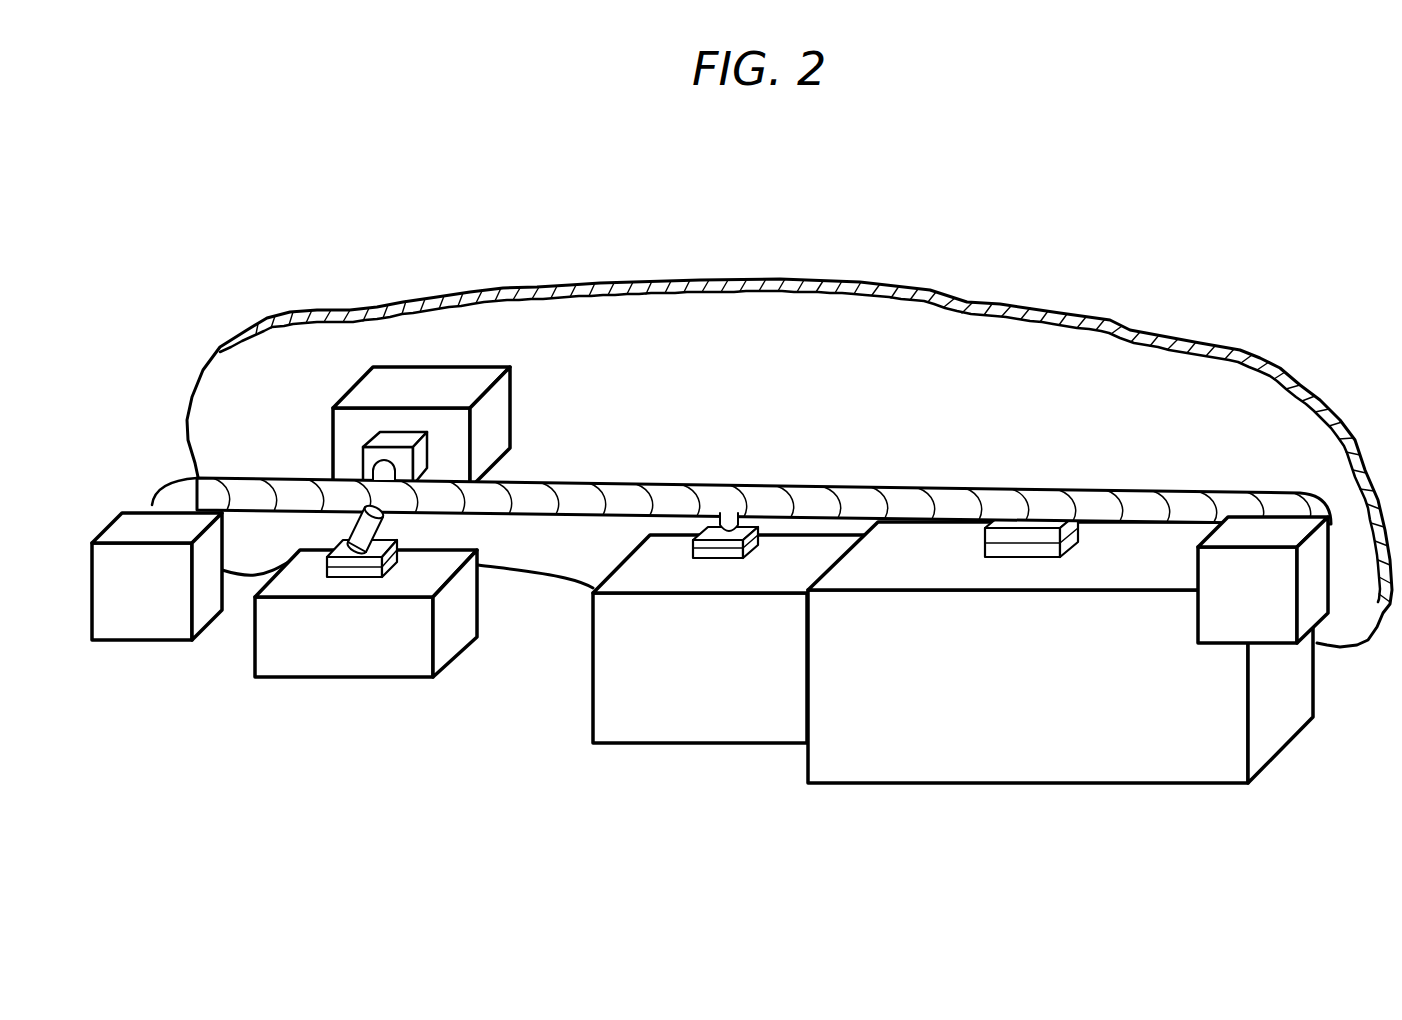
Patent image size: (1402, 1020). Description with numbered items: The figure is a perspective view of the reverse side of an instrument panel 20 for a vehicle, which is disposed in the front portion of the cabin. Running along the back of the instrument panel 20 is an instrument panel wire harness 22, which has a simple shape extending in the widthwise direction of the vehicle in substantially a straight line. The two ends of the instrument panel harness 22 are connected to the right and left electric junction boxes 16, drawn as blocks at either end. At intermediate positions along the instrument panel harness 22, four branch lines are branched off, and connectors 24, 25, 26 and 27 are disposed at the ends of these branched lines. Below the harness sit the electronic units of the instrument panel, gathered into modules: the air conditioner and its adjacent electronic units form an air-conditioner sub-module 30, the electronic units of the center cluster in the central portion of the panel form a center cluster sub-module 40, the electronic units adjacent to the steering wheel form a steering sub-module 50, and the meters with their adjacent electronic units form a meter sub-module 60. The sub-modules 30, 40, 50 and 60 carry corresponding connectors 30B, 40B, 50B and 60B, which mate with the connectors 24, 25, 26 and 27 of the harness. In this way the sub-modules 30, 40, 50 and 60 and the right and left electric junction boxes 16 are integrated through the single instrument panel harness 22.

The electric junction box 16 is at (142, 631).
The instrument panel 20 is at (868, 317).
The instrument panel wire harness 22 is at (795, 493).
The connector 24 is at (1030, 537).
The connector 25 is at (705, 543).
The connector 26 is at (347, 560).
The connector 27 is at (400, 473).
The air-conditioner sub-module 30 is at (1000, 778).
The connector 30B is at (1020, 558).
The center cluster sub-module 40 is at (725, 736).
The connector 40B is at (727, 559).
The steering sub-module 50 is at (382, 668).
The connector 50B is at (358, 578).
The meter sub-module 60 is at (452, 382).
The connector 60B is at (400, 432).